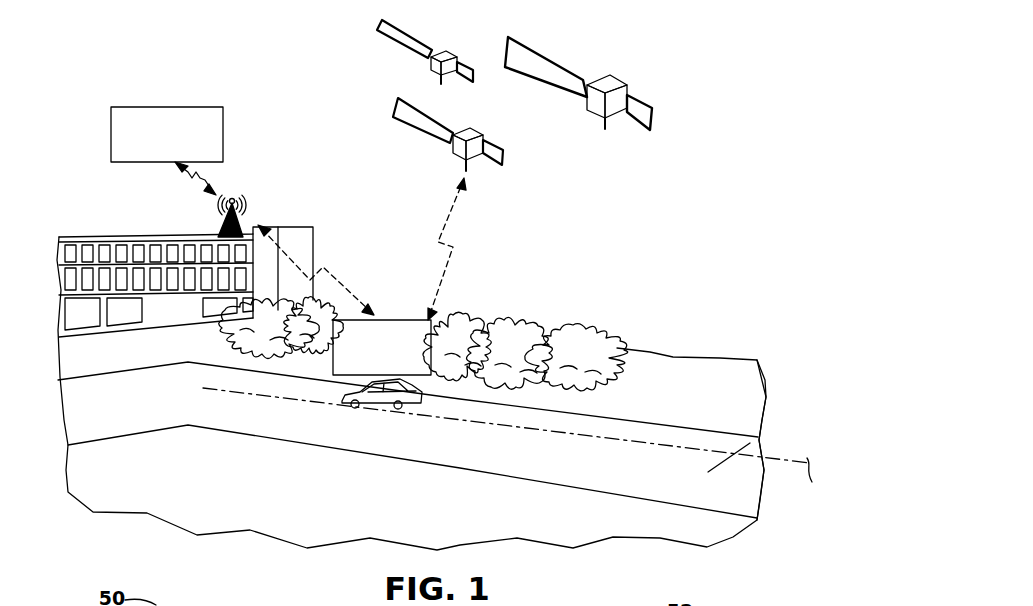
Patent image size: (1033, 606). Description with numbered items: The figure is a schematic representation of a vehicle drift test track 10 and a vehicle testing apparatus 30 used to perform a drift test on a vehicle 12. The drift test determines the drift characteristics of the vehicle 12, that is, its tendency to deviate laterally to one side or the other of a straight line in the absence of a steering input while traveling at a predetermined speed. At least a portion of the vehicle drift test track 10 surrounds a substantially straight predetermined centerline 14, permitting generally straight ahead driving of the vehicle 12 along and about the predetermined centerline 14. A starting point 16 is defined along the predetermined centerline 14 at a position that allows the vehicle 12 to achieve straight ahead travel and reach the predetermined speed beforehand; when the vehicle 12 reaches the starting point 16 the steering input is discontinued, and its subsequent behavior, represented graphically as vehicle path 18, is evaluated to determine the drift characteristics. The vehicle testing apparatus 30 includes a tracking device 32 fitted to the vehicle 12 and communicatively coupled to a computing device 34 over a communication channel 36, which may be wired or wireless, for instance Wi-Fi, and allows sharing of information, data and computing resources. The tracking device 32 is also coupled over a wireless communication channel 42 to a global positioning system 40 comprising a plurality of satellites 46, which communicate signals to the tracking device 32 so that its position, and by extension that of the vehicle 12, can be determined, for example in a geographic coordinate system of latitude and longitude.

The vehicle drift test track 10 is at (772, 436).
The vehicle 12 is at (372, 410).
The predetermined centerline 14 is at (462, 425).
The starting point 16 is at (733, 450).
The vehicle path 18 is at (627, 440).
The vehicle testing apparatus 30 is at (348, 163).
The tracking device 32 is at (400, 318).
The computing device 34 is at (164, 106).
The communication channel 36 is at (200, 172).
The global positioning system (GPS) 40 is at (543, 85).
The communication channel 42 is at (452, 210).
The satellites 46 is at (405, 28).